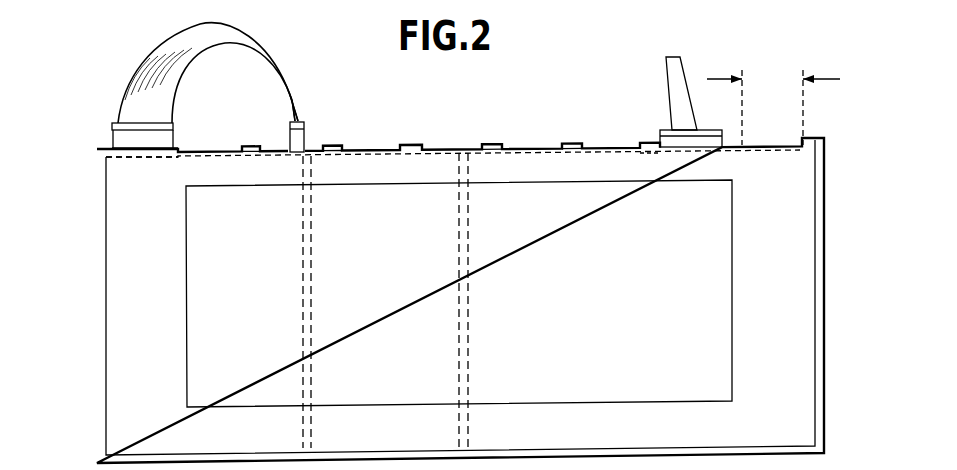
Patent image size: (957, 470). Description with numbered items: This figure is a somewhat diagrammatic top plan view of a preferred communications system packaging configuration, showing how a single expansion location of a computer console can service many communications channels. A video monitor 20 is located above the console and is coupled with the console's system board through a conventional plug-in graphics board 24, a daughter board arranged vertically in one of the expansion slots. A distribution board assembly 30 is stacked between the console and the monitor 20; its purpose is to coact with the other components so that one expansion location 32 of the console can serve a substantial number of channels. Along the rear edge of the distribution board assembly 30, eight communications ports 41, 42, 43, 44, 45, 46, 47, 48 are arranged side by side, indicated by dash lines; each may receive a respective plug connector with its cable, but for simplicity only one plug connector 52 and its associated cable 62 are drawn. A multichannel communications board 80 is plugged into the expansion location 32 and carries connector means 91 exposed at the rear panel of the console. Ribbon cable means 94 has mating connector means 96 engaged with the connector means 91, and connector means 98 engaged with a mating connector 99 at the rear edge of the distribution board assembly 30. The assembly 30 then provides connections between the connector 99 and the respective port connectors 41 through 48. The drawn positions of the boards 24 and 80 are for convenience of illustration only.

The video monitor 20 is at (743, 292).
The graphics board 24 is at (467, 378).
The distribution board assembly 30 is at (826, 368).
The expansion location 32 is at (290, 232).
The communications port 41 is at (773, 149).
The communications port 42 is at (645, 146).
The communications port 43 is at (598, 152).
The communications port 44 is at (533, 152).
The communications port 45 is at (451, 153).
The communications port 46 is at (374, 157).
The communications port 47 is at (290, 166).
The communications port 48 is at (213, 157).
The plug connector 52 is at (675, 130).
The cable 62 is at (685, 78).
The multichannel communications board 80 is at (302, 333).
The connector means 91 is at (300, 165).
The ribbon cable means 94 is at (157, 60).
The mating connector means 96 is at (304, 135).
The connector means 98 is at (118, 138).
The connector 99 is at (128, 163).